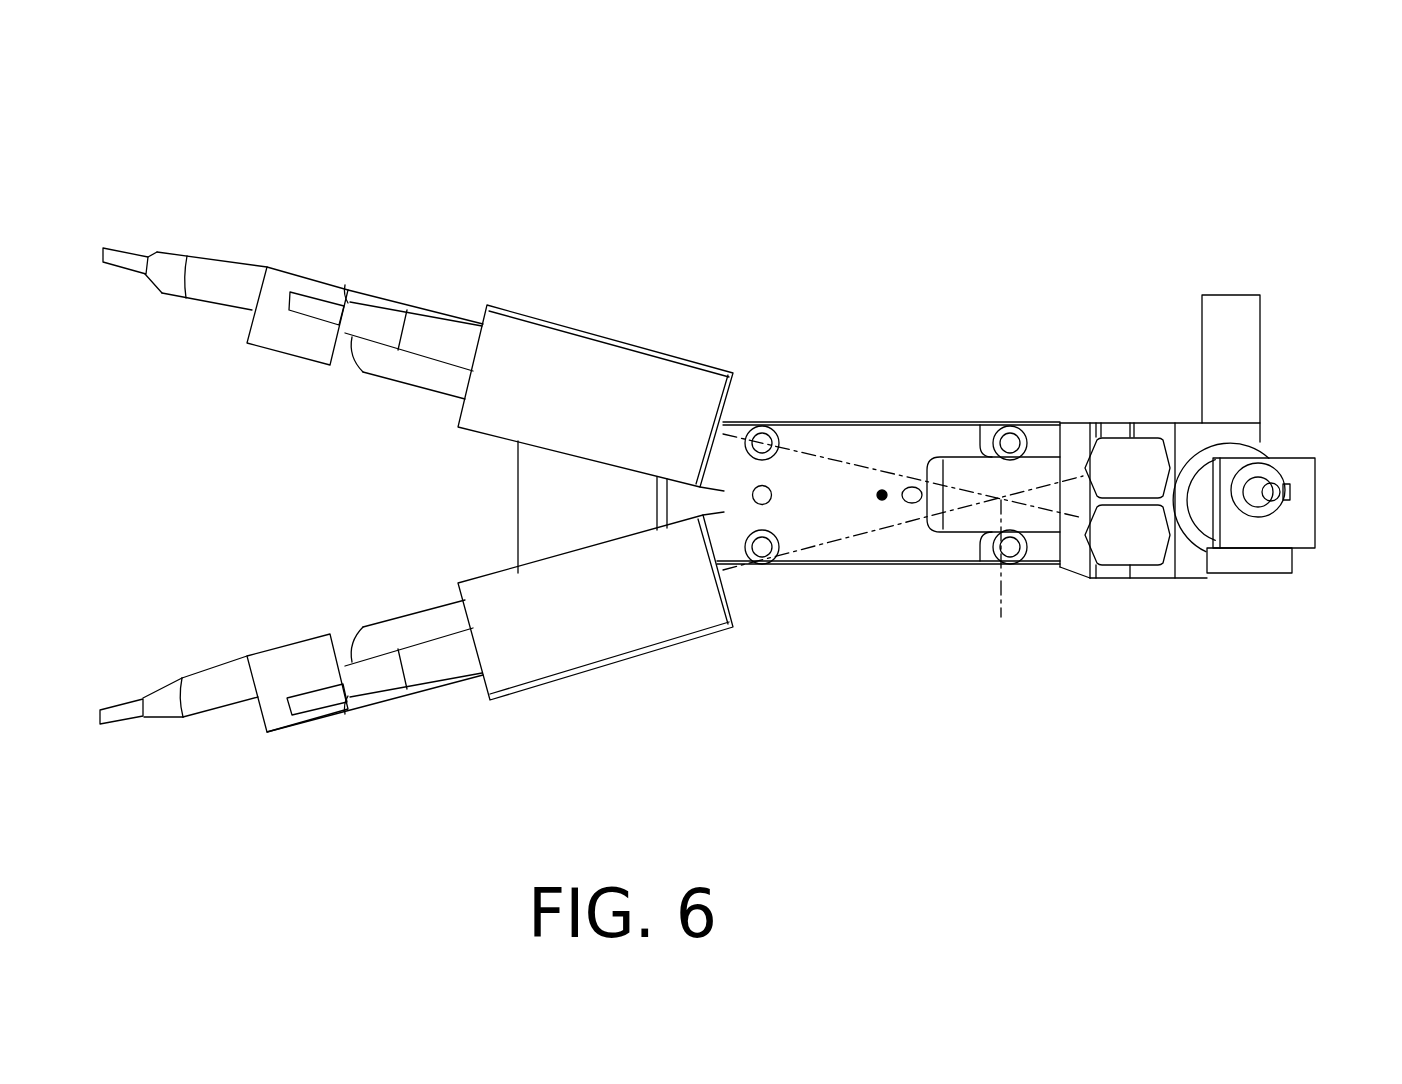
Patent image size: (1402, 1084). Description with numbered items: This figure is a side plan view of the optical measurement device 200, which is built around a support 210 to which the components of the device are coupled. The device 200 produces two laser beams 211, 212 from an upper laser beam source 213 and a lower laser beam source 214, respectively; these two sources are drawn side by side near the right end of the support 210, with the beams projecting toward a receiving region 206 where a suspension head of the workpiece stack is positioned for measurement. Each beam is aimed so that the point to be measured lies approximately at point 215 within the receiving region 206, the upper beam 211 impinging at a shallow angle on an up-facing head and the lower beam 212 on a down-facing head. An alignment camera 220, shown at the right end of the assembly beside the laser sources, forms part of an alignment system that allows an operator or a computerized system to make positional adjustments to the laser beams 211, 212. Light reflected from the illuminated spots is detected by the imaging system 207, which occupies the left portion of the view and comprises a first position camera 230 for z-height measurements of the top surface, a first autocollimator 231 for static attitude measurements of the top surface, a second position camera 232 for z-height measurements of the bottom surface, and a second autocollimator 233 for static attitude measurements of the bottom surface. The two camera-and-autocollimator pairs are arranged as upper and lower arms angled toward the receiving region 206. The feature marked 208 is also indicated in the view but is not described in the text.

The optical measurement device 200 is at (949, 181).
The receiving region 206 is at (856, 515).
The imaging system 207 is at (641, 199).
The adjustment knob assembly 208 is at (1249, 618).
The support 210 is at (803, 434).
The laser beam 211 is at (980, 433).
The laser beam 212 is at (1085, 520).
The upper laser beam source 213 is at (1138, 458).
The lower laser beam source 214 is at (1123, 537).
The point 215 is at (1060, 482).
The alignment camera 220 is at (1295, 533).
The first position camera 230 is at (307, 288).
The first autocollimator 231 is at (477, 398).
The second position camera 232 is at (263, 650).
The second autocollimator 233 is at (508, 657).